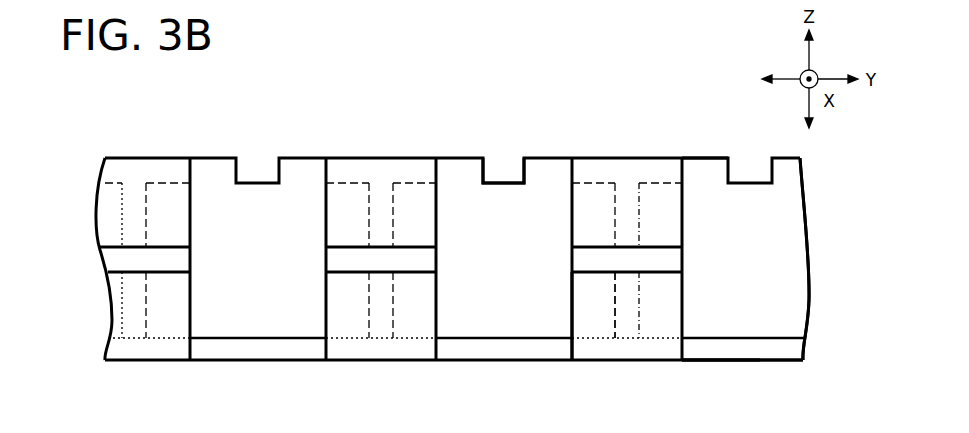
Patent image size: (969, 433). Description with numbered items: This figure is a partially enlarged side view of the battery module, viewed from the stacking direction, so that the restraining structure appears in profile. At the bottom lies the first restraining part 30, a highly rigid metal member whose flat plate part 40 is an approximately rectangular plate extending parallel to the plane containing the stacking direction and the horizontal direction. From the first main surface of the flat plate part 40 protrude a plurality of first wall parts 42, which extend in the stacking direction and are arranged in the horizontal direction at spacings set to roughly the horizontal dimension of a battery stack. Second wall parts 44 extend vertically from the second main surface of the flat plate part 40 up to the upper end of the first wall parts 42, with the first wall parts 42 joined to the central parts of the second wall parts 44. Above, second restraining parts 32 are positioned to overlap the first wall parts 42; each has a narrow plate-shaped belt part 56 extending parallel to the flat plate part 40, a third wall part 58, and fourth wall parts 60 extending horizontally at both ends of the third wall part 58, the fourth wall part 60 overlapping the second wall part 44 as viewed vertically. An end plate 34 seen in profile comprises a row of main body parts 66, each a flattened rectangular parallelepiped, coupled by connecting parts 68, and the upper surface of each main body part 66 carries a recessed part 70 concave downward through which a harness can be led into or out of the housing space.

The connecting part 68 is at (333, 258).
The main body part 66 is at (453, 182).
The recessed part 70 is at (524, 167).
The fourth wall part 60 is at (578, 217).
The belt part 56 is at (606, 190).
The third wall part 58 is at (640, 212).
The second restraining part 32 is at (681, 150).
The end plate 34 is at (817, 270).
The first restraining part 30 is at (817, 350).
The flat plate part 40 is at (713, 360).
The second wall part 44 is at (570, 315).
The first wall part 42 is at (615, 317).